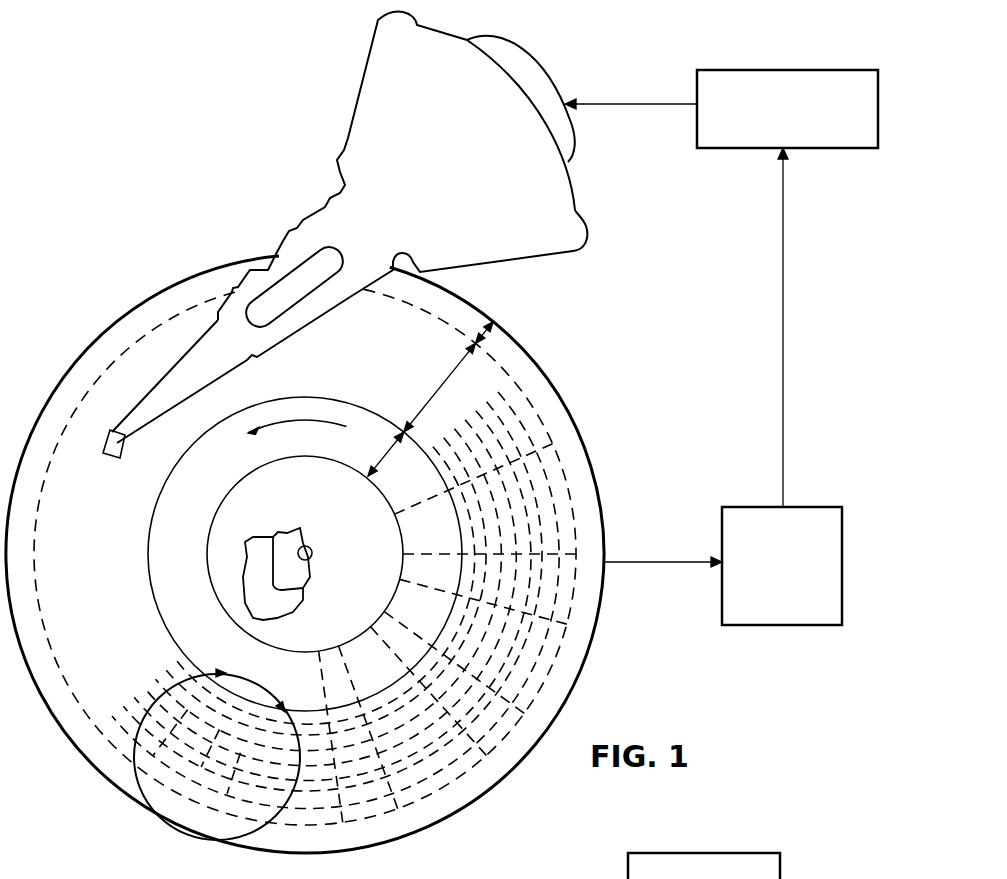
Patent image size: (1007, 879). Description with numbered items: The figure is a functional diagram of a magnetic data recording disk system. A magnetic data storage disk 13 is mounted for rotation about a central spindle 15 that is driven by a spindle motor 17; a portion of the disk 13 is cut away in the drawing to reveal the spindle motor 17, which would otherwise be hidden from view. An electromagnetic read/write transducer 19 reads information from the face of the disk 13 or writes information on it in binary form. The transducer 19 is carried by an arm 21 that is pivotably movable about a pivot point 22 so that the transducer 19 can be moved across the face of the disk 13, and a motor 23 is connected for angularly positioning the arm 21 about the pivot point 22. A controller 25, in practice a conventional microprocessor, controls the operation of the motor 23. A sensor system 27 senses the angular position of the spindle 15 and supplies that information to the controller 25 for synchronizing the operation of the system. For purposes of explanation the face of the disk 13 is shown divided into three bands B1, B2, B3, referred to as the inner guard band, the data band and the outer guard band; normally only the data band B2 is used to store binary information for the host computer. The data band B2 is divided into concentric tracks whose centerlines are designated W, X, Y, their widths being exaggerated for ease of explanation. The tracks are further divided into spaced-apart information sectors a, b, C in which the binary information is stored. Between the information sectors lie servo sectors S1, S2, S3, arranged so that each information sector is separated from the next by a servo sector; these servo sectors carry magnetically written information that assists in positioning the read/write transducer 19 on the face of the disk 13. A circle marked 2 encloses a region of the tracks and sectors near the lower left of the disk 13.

The magnetic data storage disk 13 is at (166, 300).
The central spindle 15 is at (312, 551).
The spindle motor 17 is at (292, 575).
The electromagnetic read/write transducer 19 is at (117, 424).
The arm 21 is at (276, 265).
The pivot point 22 is at (380, 220).
The motor 23 is at (527, 75).
The controller 25 is at (740, 70).
The sensor system 27 is at (807, 505).
The inner guard band B1 is at (380, 462).
The data band B2 is at (444, 383).
The outer guard band B3 is at (486, 336).
The information sector C is at (548, 510).
The servo sector S1 is at (367, 812).
The servo sector S2 is at (494, 740).
The servo sector S3 is at (560, 592).
The information sector a is at (448, 782).
The information sector b is at (552, 666).
The track centerline X is at (160, 748).
The track centerline Y is at (203, 758).
The track centerline W is at (223, 800).
The detail view circle 2 is at (217, 749).